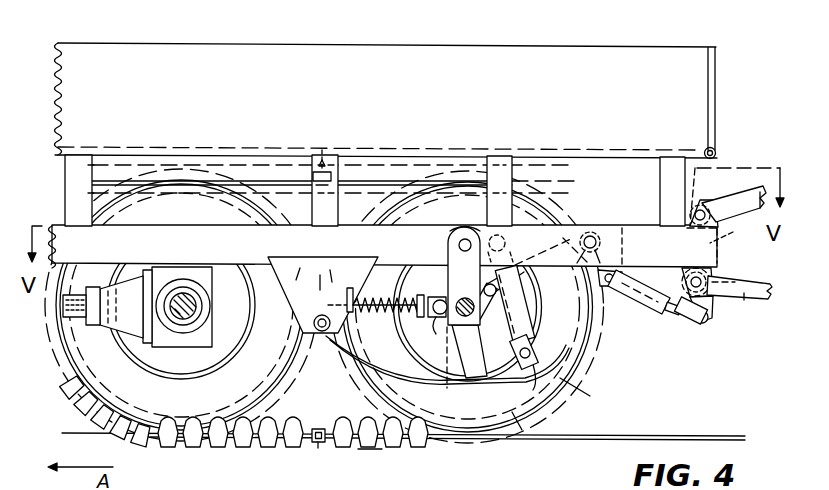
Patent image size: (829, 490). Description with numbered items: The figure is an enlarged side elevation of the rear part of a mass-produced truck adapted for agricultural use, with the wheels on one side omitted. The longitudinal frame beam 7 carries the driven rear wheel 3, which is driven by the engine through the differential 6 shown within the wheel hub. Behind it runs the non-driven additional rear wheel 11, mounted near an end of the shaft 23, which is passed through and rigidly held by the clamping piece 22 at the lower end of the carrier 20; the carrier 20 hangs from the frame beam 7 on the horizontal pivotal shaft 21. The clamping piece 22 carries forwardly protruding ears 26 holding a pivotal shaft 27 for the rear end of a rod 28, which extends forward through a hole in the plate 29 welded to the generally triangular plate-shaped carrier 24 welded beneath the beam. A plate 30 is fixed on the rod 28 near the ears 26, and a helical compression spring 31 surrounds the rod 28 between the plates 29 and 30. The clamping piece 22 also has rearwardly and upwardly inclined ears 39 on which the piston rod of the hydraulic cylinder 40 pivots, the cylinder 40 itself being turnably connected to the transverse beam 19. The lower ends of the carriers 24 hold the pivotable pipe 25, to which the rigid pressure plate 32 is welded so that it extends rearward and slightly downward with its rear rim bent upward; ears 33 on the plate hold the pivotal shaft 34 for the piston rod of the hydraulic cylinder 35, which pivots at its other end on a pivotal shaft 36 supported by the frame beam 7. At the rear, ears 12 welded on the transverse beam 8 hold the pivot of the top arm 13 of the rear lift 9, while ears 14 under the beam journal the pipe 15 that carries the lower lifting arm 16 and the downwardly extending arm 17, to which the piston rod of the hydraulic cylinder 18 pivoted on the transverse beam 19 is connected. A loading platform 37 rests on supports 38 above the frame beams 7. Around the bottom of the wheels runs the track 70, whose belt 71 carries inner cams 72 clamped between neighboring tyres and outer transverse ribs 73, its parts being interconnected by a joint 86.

The rear wheels 3 is at (257, 397).
The differential 6 is at (183, 340).
The frame beams 7 is at (647, 228).
The transverse beam 8 is at (726, 236).
The rear lift 9 is at (738, 192).
The second set of rear wheels 11 is at (512, 414).
The ears 12 is at (699, 205).
The top arm 13 is at (748, 172).
The ears 14 is at (714, 266).
The pipe 15 is at (743, 278).
The lower lifting arm 16 is at (745, 300).
The arm 17 is at (710, 319).
The hydraulic cylinder 18 is at (665, 314).
The transverse beam 19 is at (622, 248).
The carrier 20 is at (455, 230).
The pivotal shaft 21 is at (468, 238).
The clamping piece 22 is at (460, 378).
The shaft 23 is at (478, 376).
The carrier 24 is at (293, 305).
The pipe 25 is at (314, 324).
The ears 26 is at (438, 297).
The pivotal shaft 27 is at (452, 332).
The rod 28 is at (440, 318).
The plate 29 is at (349, 288).
The plate 30 is at (415, 318).
The helical compression spring 31 is at (373, 312).
The pressure plate 32 is at (350, 347).
The ears 33 is at (546, 422).
The pivotal shaft 34 is at (576, 386).
The hydraulic cylinder 35 is at (588, 354).
The pivotal shaft 36 is at (509, 245).
The loading platform 37 is at (160, 50).
The supports 38 is at (70, 183).
The ears 39 is at (484, 315).
The hydraulic cylinder 40 is at (536, 298).
The track 70 is at (258, 444).
The belt 71 is at (418, 451).
The cams 72 is at (371, 418).
The transverse ribs 73 is at (372, 452).
The joint 86 is at (322, 146).